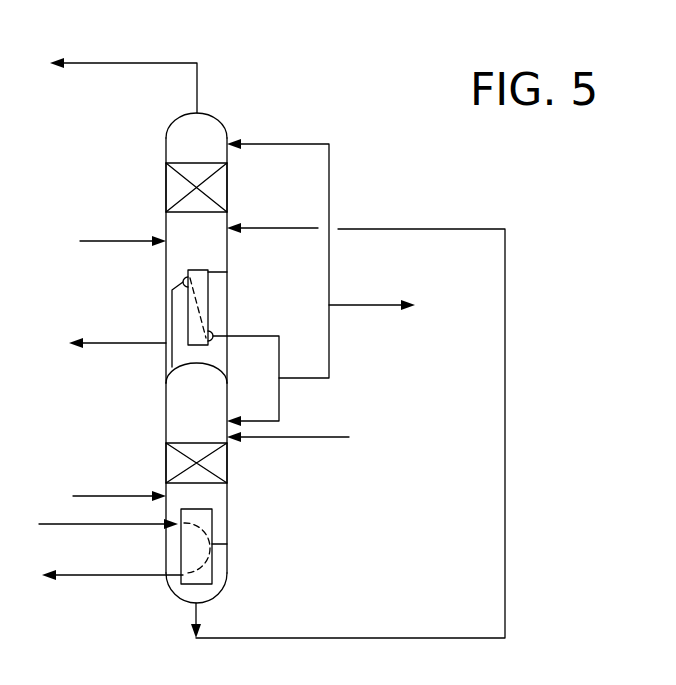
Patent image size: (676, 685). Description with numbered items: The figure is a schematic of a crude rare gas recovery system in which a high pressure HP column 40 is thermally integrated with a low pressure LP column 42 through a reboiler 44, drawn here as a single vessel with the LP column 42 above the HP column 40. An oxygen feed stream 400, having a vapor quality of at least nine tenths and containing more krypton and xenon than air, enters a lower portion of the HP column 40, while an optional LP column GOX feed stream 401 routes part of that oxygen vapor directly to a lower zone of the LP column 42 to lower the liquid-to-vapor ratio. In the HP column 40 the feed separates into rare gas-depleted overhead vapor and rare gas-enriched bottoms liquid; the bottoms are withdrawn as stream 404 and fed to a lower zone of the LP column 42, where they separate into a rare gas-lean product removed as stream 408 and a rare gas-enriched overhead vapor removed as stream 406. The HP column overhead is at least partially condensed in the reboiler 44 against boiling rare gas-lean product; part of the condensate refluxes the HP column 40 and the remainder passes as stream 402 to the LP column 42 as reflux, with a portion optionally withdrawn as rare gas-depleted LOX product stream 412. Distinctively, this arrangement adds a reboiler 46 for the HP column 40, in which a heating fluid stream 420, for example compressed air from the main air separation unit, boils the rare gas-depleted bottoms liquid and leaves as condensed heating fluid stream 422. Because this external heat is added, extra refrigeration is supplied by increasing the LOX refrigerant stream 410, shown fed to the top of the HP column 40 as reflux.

The HP column 40 is at (165, 434).
The LP column 42 is at (165, 138).
The reboiler 44 is at (228, 272).
The reboiler 46 is at (228, 544).
The oxygen feed stream 400 is at (140, 496).
The LP column GOX feed stream 401 is at (134, 241).
The reflux stream 402 is at (329, 362).
The enriched bottoms liquid stream 404 is at (323, 637).
The rare gas-enriched overhead vapor stream 406 is at (156, 63).
The rare gas-lean product stream 408 is at (146, 343).
The LOX refrigerant stream 410 is at (292, 437).
The rare gas-depleted LOX product stream 412 is at (358, 305).
The heating fluid stream 420 is at (142, 524).
The condensed heating fluid stream 422 is at (90, 576).